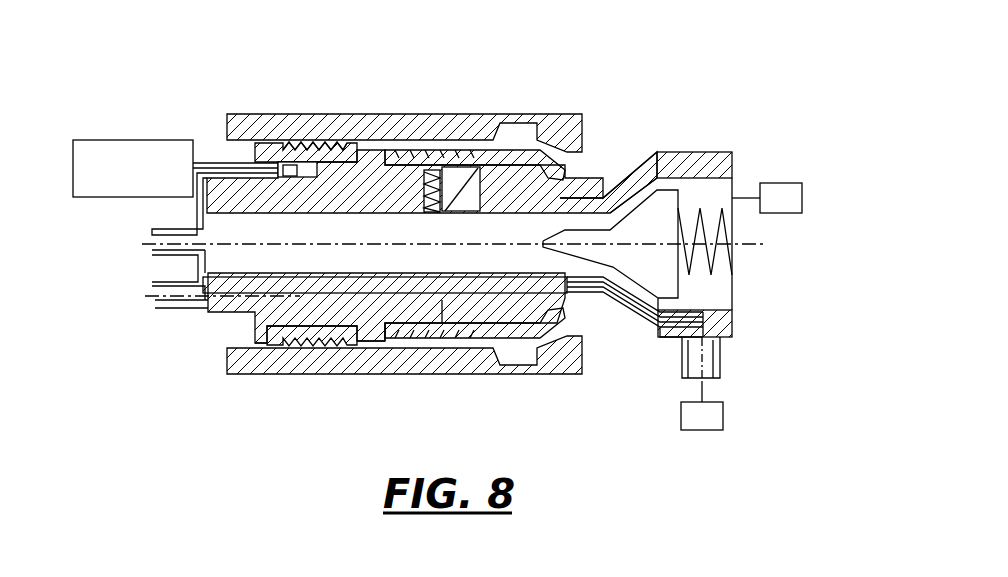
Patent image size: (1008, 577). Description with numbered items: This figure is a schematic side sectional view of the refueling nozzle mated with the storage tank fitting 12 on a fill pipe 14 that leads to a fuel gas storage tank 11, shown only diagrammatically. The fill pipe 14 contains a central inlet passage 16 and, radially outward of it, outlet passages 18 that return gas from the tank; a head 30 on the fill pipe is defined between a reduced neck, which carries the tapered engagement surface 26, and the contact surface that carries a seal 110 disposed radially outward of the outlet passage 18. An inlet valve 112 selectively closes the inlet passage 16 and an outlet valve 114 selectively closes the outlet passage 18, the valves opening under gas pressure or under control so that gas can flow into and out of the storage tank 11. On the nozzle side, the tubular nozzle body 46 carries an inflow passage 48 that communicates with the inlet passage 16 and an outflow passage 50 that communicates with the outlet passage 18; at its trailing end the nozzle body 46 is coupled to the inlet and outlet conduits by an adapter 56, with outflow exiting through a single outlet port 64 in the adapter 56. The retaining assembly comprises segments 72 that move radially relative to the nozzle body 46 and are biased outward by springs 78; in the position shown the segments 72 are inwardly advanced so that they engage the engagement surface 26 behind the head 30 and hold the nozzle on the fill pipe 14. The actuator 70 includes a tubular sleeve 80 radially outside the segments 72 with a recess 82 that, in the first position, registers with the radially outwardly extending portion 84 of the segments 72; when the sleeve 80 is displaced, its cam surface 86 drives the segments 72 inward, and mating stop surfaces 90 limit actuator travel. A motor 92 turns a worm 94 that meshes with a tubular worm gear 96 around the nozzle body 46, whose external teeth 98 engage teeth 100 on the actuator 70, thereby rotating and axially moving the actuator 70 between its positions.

The fuel gas storage tank 11 is at (803, 198).
The storage tank fitting 12 is at (658, 150).
The fill pipe 14 is at (735, 153).
The central inlet passage 16 is at (562, 222).
The outlet passages 18 is at (527, 290).
The engagement surface 26 is at (570, 190).
The head 30 is at (492, 204).
The nozzle body 46 is at (288, 348).
The inflow passage 48 is at (235, 255).
The outflow passage 50 is at (210, 310).
The adapter 56 is at (193, 266).
The outlet port 64 is at (167, 293).
The actuator 70 is at (534, 112).
The segments 72 is at (464, 148).
The springs 78 is at (430, 196).
The tubular sleeve 80 is at (350, 348).
The recess 82 is at (515, 362).
The radially outwardly extending portion 84 is at (562, 320).
The cam surface 86 is at (574, 162).
The stop surfaces 90 is at (413, 348).
The motor 92 is at (135, 141).
The worm 94 is at (283, 160).
The worm gear 96 is at (304, 148).
The external teeth 98 is at (316, 346).
The teeth 100 is at (335, 148).
The seal 110 is at (465, 308).
The inlet valve 112 is at (637, 263).
The outlet valve 114 is at (723, 416).